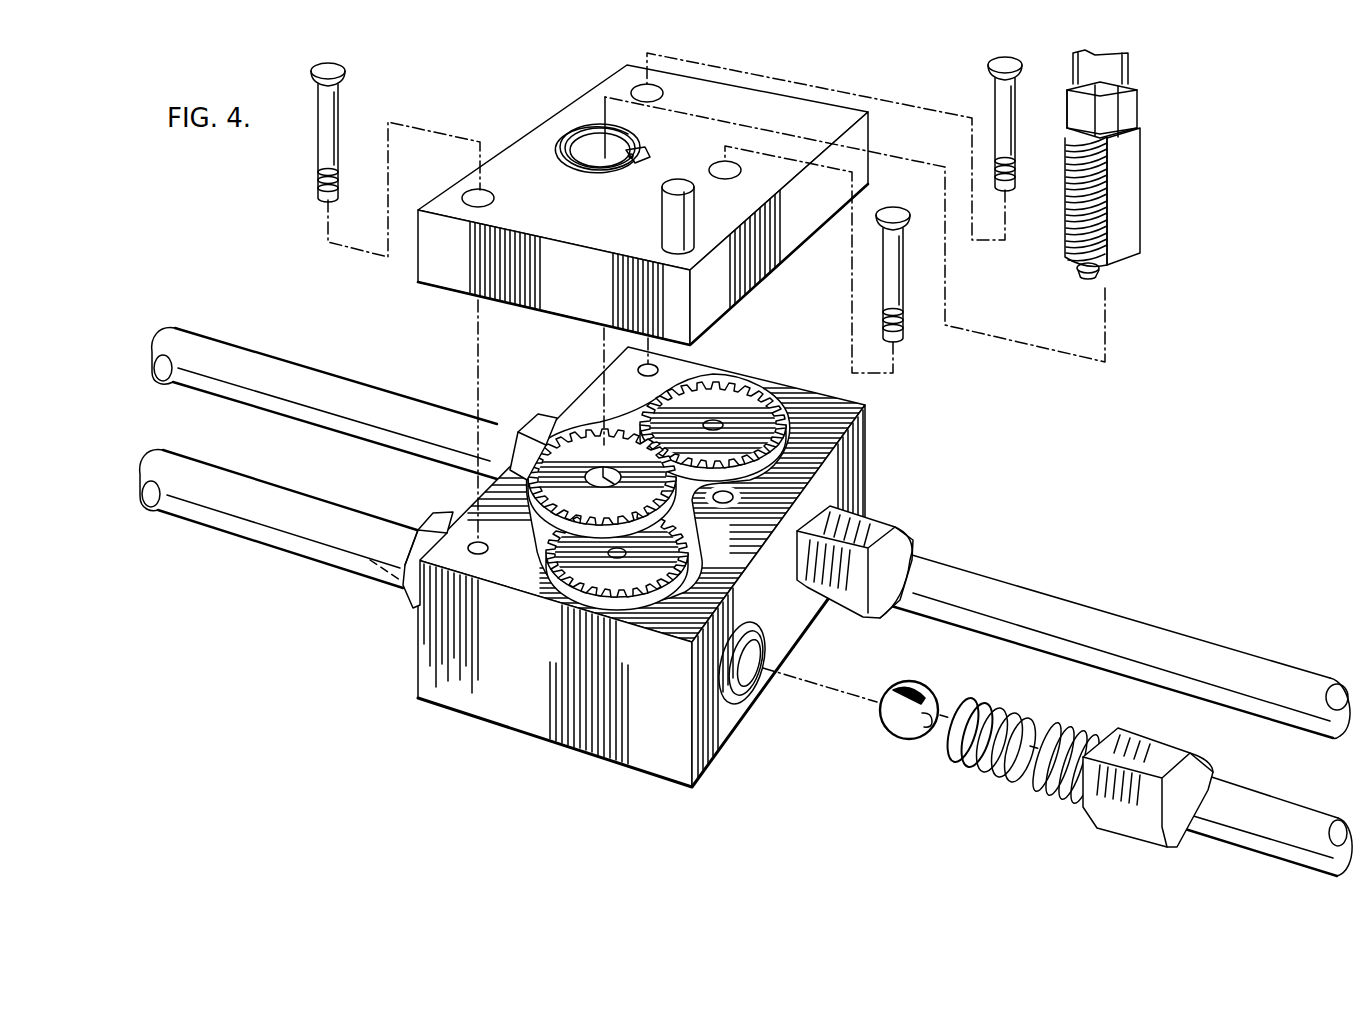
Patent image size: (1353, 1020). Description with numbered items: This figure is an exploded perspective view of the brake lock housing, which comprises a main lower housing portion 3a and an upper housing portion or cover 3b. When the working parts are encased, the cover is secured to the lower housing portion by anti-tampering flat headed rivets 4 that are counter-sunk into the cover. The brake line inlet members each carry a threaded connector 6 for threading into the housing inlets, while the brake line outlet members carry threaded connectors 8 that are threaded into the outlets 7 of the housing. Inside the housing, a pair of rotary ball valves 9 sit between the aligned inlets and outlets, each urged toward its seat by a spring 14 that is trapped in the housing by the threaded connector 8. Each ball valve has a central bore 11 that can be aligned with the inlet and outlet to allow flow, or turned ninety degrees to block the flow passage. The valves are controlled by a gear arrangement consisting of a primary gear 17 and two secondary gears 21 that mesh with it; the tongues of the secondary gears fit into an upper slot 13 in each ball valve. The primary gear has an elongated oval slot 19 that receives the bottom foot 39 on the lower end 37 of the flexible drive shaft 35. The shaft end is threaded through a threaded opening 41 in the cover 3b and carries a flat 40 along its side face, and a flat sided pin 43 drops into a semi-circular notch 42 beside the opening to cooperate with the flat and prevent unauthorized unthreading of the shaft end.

The main lower housing portion 3a is at (488, 700).
The upper housing portion or cover 3b is at (563, 115).
The flat headed rivets 4 is at (315, 138).
The threaded connector 6 is at (538, 418).
The outlets 7 is at (752, 693).
The threaded connectors 8 is at (872, 528).
The rotary ball valves 9 is at (895, 730).
The central bore 11 is at (933, 733).
The upper slot 13 is at (907, 683).
The spring 14 is at (980, 765).
The primary gear 17 is at (577, 437).
The elongated groove or slot 19 is at (613, 470).
The secondary gears 21 is at (747, 410).
The drive shaft 35 is at (1133, 62).
The lower end of the shaft 37 is at (1130, 107).
The bottom foot 39 is at (1088, 280).
The flat 40 is at (1132, 197).
The threaded opening 41 is at (640, 130).
The semi-circular notch 42 is at (626, 168).
The flat sided pin 43 is at (711, 216).